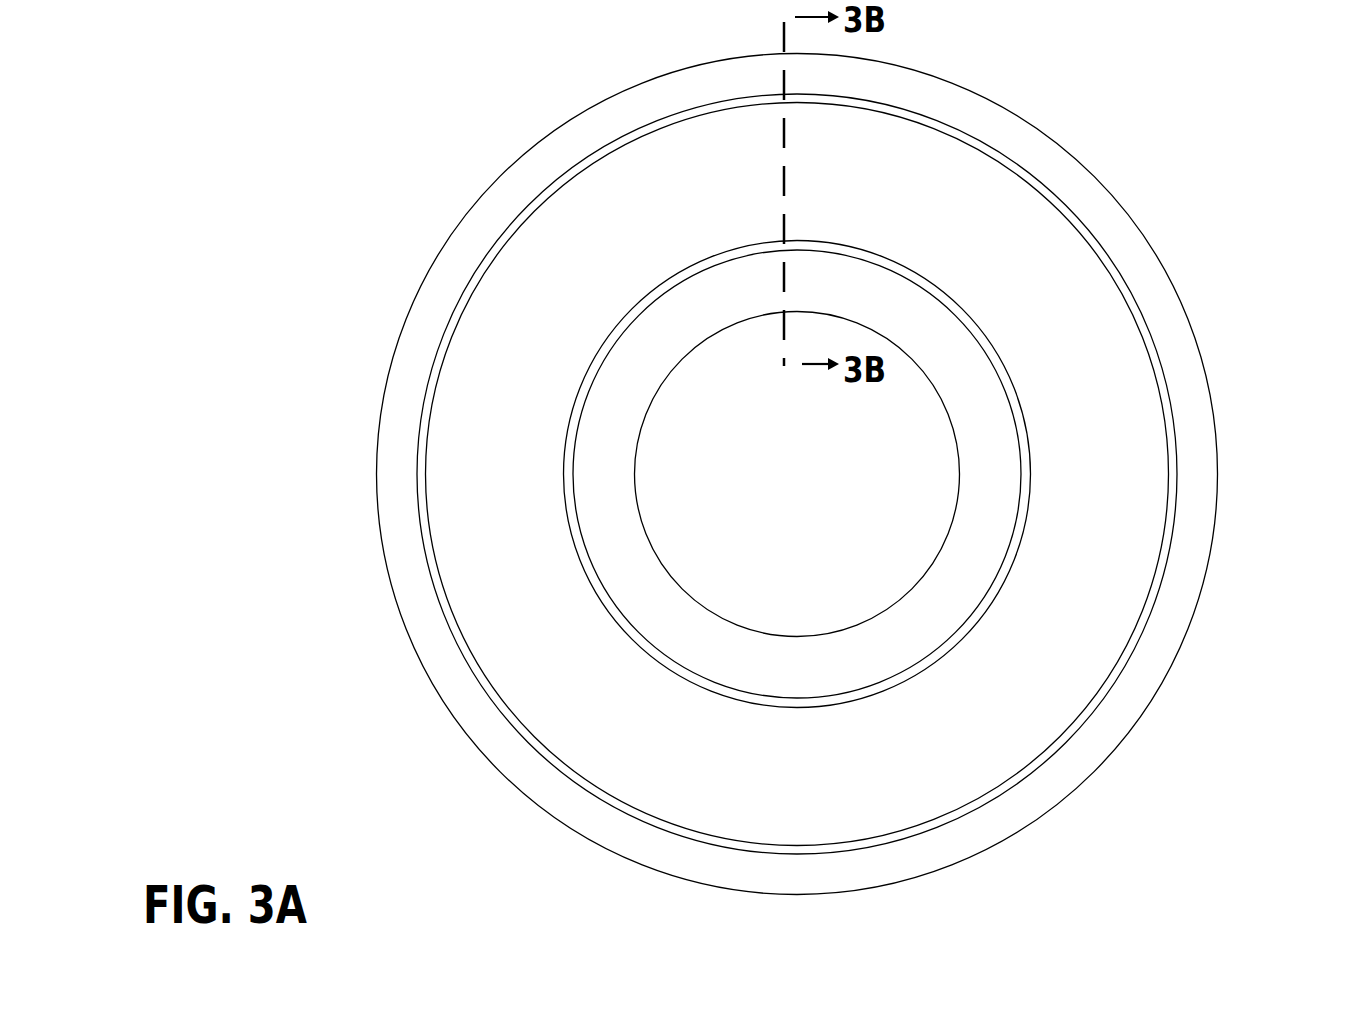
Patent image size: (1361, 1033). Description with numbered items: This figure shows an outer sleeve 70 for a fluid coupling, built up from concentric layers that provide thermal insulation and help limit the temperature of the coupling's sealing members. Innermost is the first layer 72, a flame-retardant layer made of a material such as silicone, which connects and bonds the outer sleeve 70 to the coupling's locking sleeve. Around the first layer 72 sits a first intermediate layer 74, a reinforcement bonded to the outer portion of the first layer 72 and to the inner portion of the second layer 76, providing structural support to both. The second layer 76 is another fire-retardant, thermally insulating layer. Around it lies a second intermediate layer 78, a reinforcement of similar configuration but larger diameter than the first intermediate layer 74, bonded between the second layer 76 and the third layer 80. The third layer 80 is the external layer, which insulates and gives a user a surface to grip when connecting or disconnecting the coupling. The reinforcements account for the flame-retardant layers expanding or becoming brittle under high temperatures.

The outer sleeve 70 is at (445, 147).
The first layer 72 is at (948, 592).
The first intermediate layer 74 is at (1025, 507).
The second layer 76 is at (1095, 415).
The second intermediate layer 78 is at (1135, 298).
The third layer 80 is at (1082, 186).